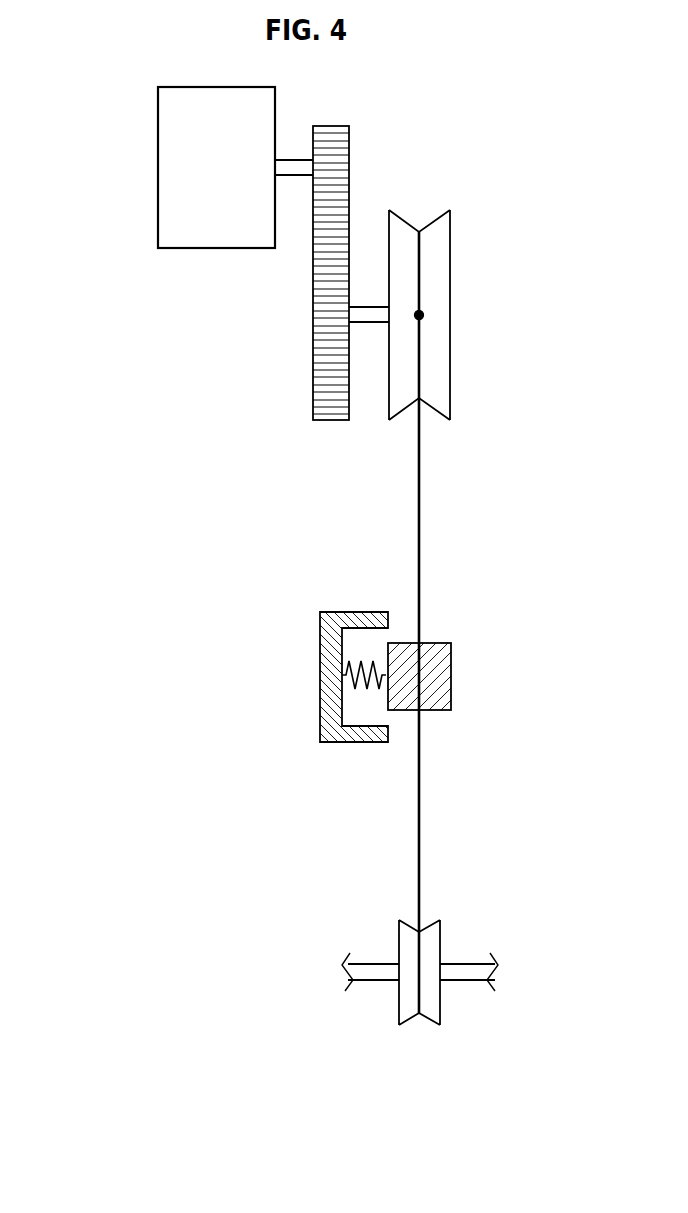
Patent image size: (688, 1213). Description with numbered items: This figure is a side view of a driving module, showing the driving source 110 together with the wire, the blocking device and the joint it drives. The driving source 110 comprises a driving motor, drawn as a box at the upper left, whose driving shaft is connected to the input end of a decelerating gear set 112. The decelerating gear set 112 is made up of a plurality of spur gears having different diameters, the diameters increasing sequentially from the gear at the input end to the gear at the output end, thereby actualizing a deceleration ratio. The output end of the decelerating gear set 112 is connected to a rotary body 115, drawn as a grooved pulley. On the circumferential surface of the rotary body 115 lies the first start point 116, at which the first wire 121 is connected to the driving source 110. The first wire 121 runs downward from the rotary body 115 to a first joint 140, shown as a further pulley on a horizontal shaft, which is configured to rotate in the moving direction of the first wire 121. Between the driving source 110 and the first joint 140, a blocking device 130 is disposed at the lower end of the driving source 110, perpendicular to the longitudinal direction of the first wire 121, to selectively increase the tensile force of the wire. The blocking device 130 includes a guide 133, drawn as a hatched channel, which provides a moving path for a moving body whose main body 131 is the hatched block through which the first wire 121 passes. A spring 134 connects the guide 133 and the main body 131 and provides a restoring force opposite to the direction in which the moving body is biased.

The driving source 110 is at (158, 168).
The decelerating gear set 112 is at (349, 216).
The rotary body 115 is at (437, 243).
The first start point 116 is at (422, 313).
The first wire 121 is at (422, 520).
The blocking device 130 is at (332, 592).
The main body 131 is at (437, 675).
The guide 133 is at (320, 635).
The spring 134 is at (362, 690).
The first joint 140 is at (432, 950).